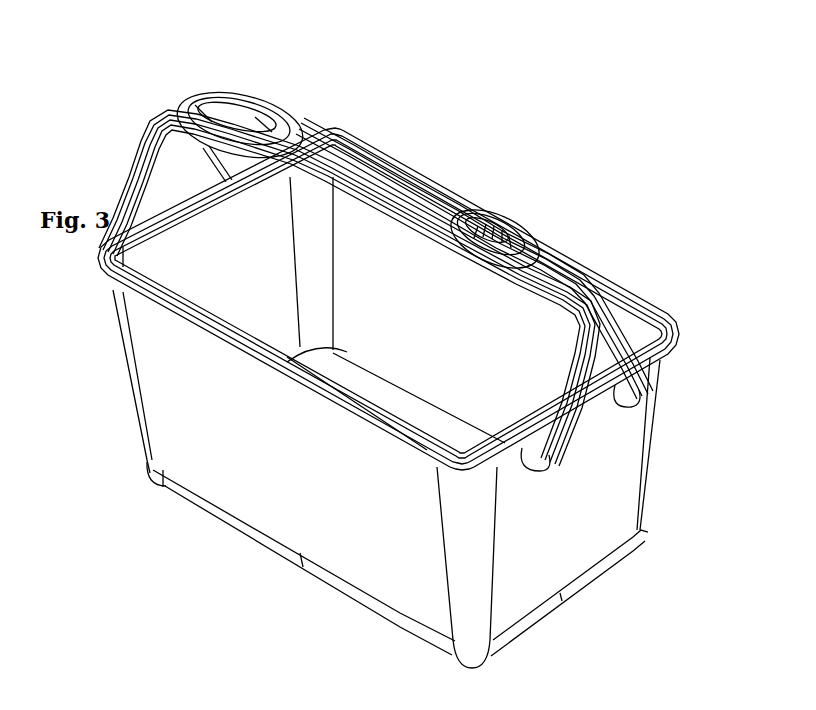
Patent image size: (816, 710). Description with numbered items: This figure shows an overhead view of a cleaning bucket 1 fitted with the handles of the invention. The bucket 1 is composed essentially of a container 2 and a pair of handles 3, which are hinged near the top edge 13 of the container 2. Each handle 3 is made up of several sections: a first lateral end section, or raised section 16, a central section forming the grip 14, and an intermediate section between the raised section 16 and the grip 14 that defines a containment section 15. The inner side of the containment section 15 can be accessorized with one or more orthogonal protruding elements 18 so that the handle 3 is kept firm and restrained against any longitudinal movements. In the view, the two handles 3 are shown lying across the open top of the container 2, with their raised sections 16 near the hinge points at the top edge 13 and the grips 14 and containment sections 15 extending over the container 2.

The bucket 1 is at (553, 239).
The container 2 is at (605, 497).
The handle 3 is at (165, 112).
The top edge 13 is at (630, 287).
The grip 14 is at (357, 153).
The containment section 15 is at (232, 122).
The raised section 16 is at (563, 433).
The grip loop 18 is at (497, 222).